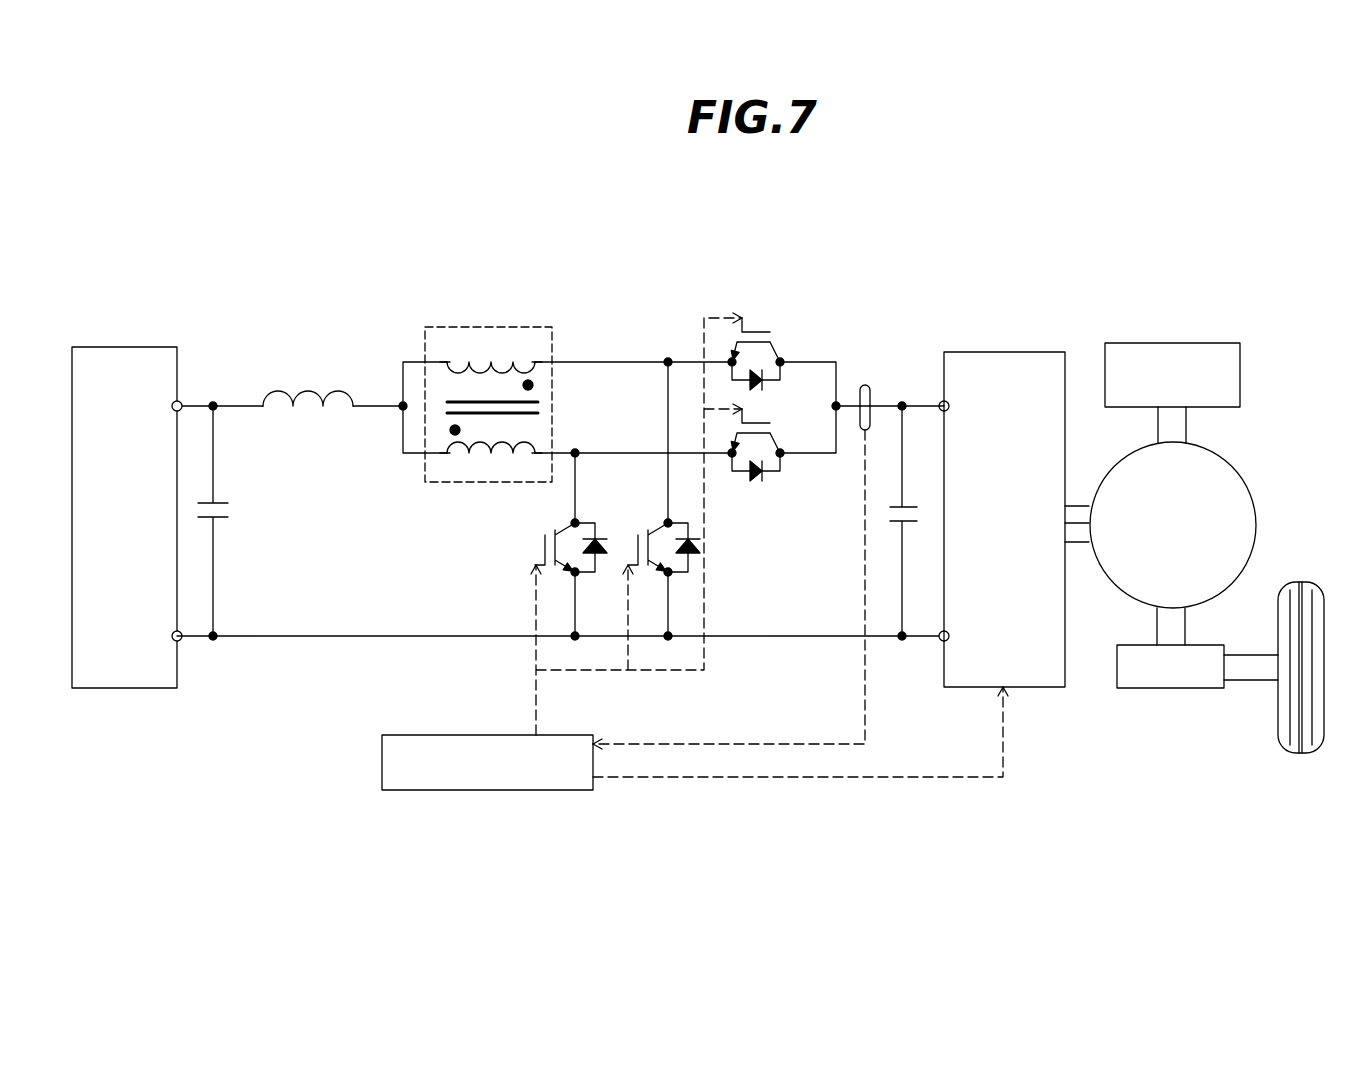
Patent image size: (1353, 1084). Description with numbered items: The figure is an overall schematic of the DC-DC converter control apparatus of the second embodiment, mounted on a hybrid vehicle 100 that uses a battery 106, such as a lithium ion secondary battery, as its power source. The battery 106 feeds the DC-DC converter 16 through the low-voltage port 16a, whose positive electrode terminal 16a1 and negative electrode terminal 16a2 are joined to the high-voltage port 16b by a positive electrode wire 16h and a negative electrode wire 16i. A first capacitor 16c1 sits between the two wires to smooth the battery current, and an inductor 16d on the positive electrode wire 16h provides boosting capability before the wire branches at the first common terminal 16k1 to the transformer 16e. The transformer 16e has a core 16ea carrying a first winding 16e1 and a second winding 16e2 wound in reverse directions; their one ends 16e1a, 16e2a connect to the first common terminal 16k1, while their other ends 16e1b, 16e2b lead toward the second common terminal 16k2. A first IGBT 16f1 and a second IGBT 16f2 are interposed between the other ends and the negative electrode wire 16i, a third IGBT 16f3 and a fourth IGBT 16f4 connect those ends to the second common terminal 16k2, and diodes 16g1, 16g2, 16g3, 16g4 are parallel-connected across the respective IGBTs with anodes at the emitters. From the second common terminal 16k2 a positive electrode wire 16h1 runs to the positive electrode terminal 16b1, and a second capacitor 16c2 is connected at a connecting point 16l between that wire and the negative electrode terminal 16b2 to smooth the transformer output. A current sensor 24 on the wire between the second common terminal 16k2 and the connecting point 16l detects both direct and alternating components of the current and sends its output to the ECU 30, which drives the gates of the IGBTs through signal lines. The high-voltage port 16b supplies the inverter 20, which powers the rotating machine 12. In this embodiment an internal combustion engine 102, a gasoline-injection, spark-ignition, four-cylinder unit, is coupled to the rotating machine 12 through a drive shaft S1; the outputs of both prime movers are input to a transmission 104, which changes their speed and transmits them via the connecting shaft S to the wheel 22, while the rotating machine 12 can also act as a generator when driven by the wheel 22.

The battery 106 is at (142, 347).
The low-voltage port 16a is at (194, 373).
The positive electrode terminal 16a1 is at (182, 403).
The negative electrode terminal 16a2 is at (180, 641).
The positive electrode wire 16h is at (254, 404).
The inductor 16d is at (318, 394).
The first common terminal 16k1 is at (400, 404).
The first capacitor 16c1 is at (222, 520).
The negative electrode wire 16i is at (345, 638).
The transformer 16e is at (515, 327).
The first winding 16e1 is at (505, 373).
The one end of first winding 16e1a is at (440, 361).
The other end of first winding 16e1b is at (540, 361).
The second winding 16e2 is at (530, 446).
The one end of second winding 16e2a is at (432, 455).
The other end of second winding 16e2b is at (543, 455).
The core 16ea is at (538, 413).
The first IGBT 16f1 is at (640, 535).
The second IGBT 16f2 is at (545, 535).
The third IGBT 16f3 is at (770, 333).
The fourth IGBT 16f4 is at (770, 437).
The diode 16g1 is at (692, 556).
The diode 16g2 is at (596, 556).
The diode 16g3 is at (763, 386).
The diode 16g4 is at (750, 482).
The DC-DC converter 16 is at (813, 276).
The second common terminal 16k2 is at (848, 404).
The positive electrode wire 16h1 is at (880, 404).
The high-voltage port 16b is at (942, 374).
The positive electrode terminal 16b1 is at (939, 406).
The negative electrode terminal 16b2 is at (940, 640).
The second capacitor 16c2 is at (890, 522).
The connecting point 16l is at (907, 412).
The current sensor 24 is at (862, 432).
The inverter 20 is at (1040, 352).
The ECU 30 is at (550, 790).
The hybrid vehicle 100 is at (1025, 240).
The internal combustion engine 102 is at (1170, 343).
The drive shaft S1 is at (1187, 424).
The rotating machine 12 is at (1248, 482).
The connecting shaft S is at (1252, 655).
The transmission 104 is at (1170, 666).
The wheel 22 is at (1305, 582).